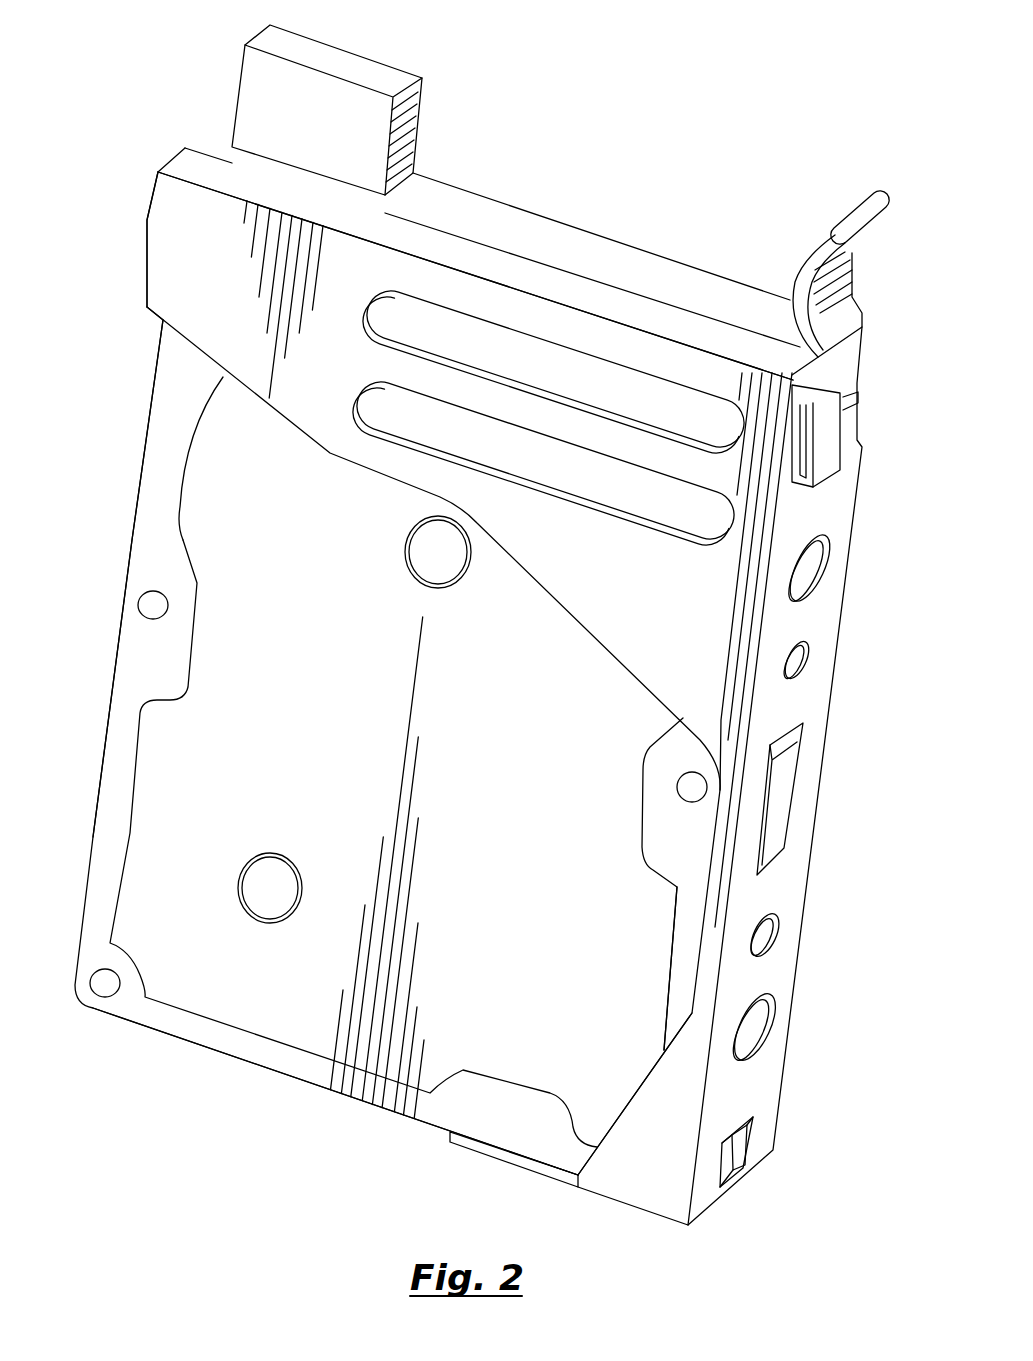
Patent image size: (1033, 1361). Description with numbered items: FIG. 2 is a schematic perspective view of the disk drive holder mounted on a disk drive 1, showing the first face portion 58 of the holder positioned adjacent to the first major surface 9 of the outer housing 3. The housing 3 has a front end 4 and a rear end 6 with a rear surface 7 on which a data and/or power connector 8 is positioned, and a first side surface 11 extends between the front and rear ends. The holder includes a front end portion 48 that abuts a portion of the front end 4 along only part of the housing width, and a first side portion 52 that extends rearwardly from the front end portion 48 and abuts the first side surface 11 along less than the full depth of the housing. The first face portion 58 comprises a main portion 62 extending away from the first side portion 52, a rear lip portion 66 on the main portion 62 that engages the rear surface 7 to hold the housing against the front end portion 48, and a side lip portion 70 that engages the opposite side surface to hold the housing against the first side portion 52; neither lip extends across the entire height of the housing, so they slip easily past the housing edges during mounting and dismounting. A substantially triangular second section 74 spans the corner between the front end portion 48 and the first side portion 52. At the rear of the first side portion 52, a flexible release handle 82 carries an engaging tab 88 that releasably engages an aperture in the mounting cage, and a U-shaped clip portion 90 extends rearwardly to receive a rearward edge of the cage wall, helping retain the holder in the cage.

The disk drive 1 is at (112, 530).
The outer housing 3 is at (210, 993).
The front end 4 is at (267, 1068).
The rear end 6 is at (575, 223).
The rear surface 7 is at (481, 230).
The data and/or power connector 8 is at (378, 78).
The first major surface 9 is at (160, 776).
The first side surface 11 is at (770, 815).
The front end portion 48 is at (485, 1148).
The first side portion 52 is at (812, 617).
The first face portion 58 is at (173, 389).
The main portion 62 is at (260, 377).
The rear lip portion 66 is at (657, 327).
The side lip portion 70 is at (155, 237).
The second section 74 is at (640, 1142).
The release handle 82 is at (832, 285).
The engaging tab 88 is at (848, 410).
The clip portion 90 is at (828, 397).